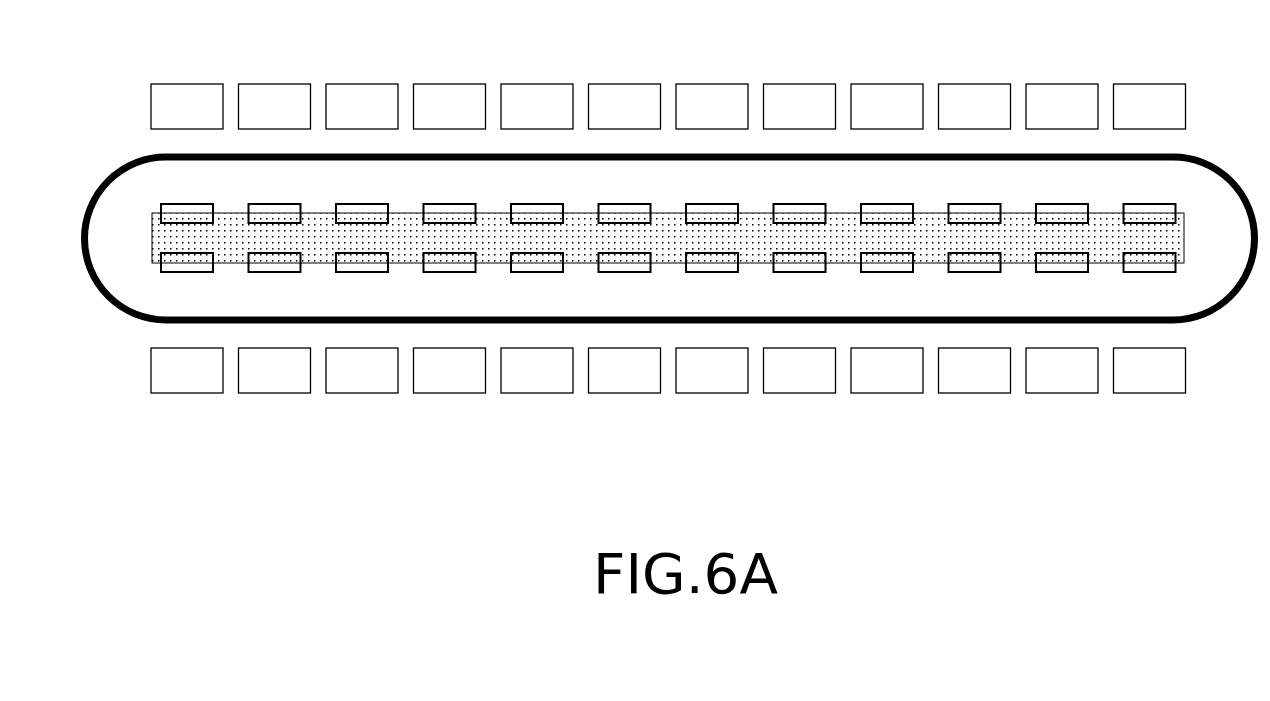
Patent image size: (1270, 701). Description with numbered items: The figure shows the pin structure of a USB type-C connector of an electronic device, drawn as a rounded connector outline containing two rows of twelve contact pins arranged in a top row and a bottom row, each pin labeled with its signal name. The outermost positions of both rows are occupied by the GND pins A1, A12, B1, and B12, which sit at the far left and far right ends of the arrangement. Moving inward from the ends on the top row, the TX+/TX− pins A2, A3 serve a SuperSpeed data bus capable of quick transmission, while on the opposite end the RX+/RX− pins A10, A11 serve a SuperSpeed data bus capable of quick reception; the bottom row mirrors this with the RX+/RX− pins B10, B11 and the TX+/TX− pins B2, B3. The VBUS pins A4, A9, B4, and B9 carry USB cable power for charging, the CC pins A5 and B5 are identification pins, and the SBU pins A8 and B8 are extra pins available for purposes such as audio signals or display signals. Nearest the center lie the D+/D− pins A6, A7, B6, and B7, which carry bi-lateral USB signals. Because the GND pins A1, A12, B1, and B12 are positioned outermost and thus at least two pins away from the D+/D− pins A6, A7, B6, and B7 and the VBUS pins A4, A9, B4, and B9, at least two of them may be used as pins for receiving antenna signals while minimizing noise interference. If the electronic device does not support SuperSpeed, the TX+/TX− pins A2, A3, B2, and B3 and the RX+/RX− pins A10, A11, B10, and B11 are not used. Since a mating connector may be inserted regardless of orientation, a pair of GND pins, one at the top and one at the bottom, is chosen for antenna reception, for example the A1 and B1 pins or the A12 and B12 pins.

The GND pin A1 is at (187, 133).
The TX+/TX− pin A2 is at (275, 133).
The TX+/TX− pin A3 is at (362, 133).
The VBUS pin A4 is at (450, 133).
The CC pin A5 is at (537, 133).
The D+/D− pin A6 is at (625, 133).
The D+/D− pin A7 is at (712, 133).
The SBU pin A8 is at (800, 133).
The VBUS pin A9 is at (887, 133).
The RX+/RX− pin A10 is at (975, 133).
The RX+/RX− pin A11 is at (1062, 133).
The GND pin A12 is at (1150, 133).
The GND pin B1 is at (1150, 344).
The TX+/TX− pin B2 is at (1062, 344).
The TX+/TX− pin B3 is at (975, 344).
The VBUS pin B4 is at (887, 344).
The CC pin B5 is at (800, 344).
The D+/D− pin B6 is at (712, 344).
The D+/D− pin B7 is at (625, 344).
The SBU pin B8 is at (537, 344).
The VBUS pin B9 is at (450, 344).
The RX+/RX− pin B10 is at (362, 344).
The RX+/RX− pin B11 is at (275, 344).
The GND pin B12 is at (187, 344).